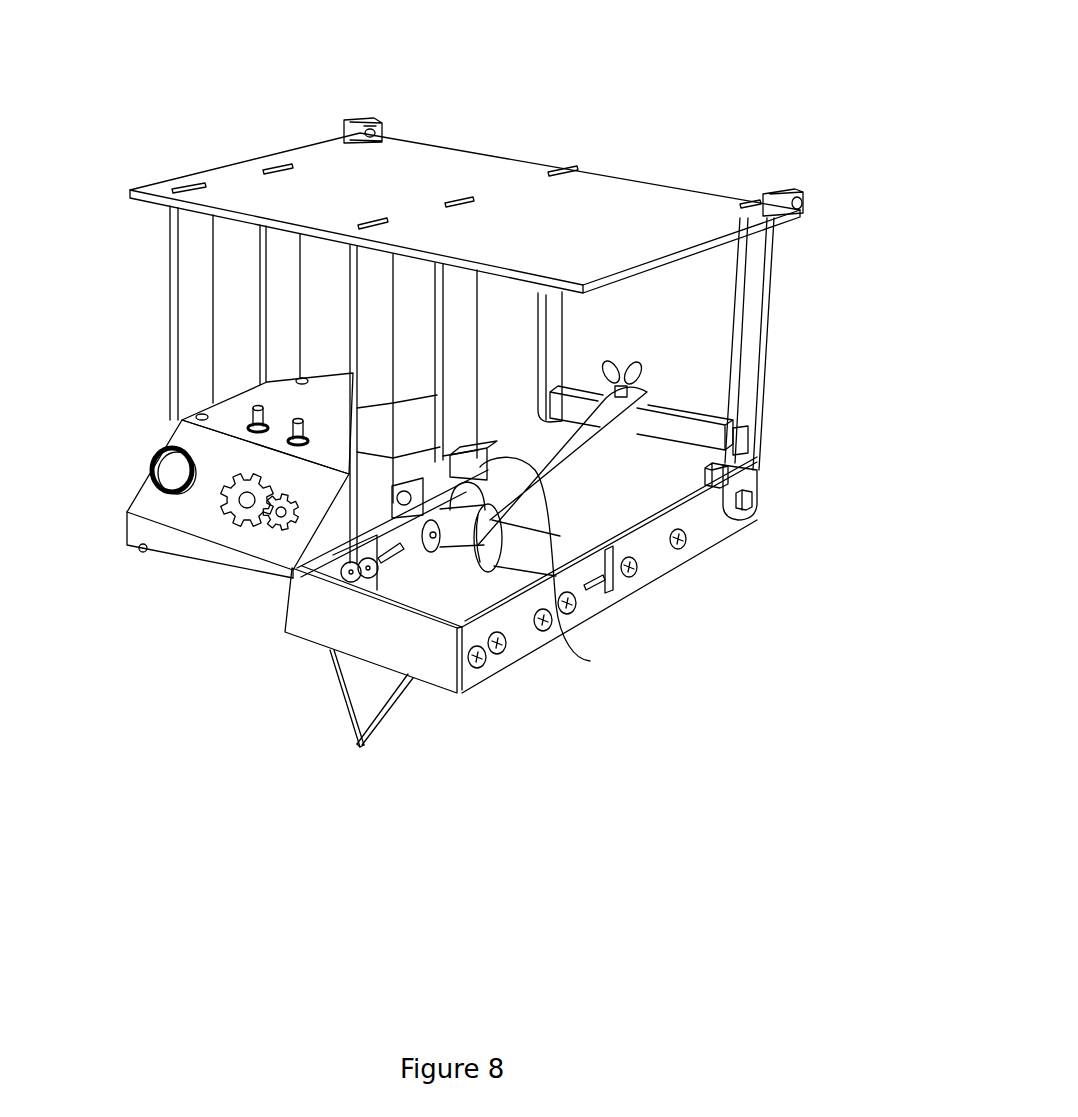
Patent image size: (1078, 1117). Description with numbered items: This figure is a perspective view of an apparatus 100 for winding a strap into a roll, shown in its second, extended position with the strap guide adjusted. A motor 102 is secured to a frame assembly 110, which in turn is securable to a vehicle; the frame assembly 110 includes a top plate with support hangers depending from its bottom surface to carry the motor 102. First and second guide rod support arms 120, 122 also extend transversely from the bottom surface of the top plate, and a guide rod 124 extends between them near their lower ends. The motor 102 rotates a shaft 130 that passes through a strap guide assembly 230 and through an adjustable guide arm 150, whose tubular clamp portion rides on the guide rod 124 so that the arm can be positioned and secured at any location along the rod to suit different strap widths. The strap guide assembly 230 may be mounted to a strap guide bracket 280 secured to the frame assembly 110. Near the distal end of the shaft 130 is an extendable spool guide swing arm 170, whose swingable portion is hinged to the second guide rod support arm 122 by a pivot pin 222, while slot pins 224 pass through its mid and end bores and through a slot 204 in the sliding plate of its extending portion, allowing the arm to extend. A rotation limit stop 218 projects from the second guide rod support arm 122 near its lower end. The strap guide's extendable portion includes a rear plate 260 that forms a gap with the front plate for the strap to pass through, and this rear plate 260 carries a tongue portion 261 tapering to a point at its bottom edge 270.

The apparatus for winding a strap 100 is at (668, 73).
The frame assembly 110 is at (231, 165).
The first guide rod support arm 120 is at (558, 310).
The second guide rod support arm 122 is at (757, 292).
The guide rod 124 is at (687, 410).
The adjustable guide arm 150 is at (583, 472).
The rotation limit stop 218 is at (730, 483).
The pivot pin 222 is at (757, 497).
The shaft 130 is at (568, 542).
The slot pins 224 is at (690, 541).
The slot 204 is at (598, 585).
The strap guide bracket 280 is at (590, 661).
The extendable spool guide swing arm 170 is at (482, 680).
The strap guide assembly 230 is at (293, 635).
The rear plate 260 is at (337, 683).
The tongue portion 261 is at (377, 707).
The bottom edge 270 is at (360, 747).
The motor 102 is at (150, 498).